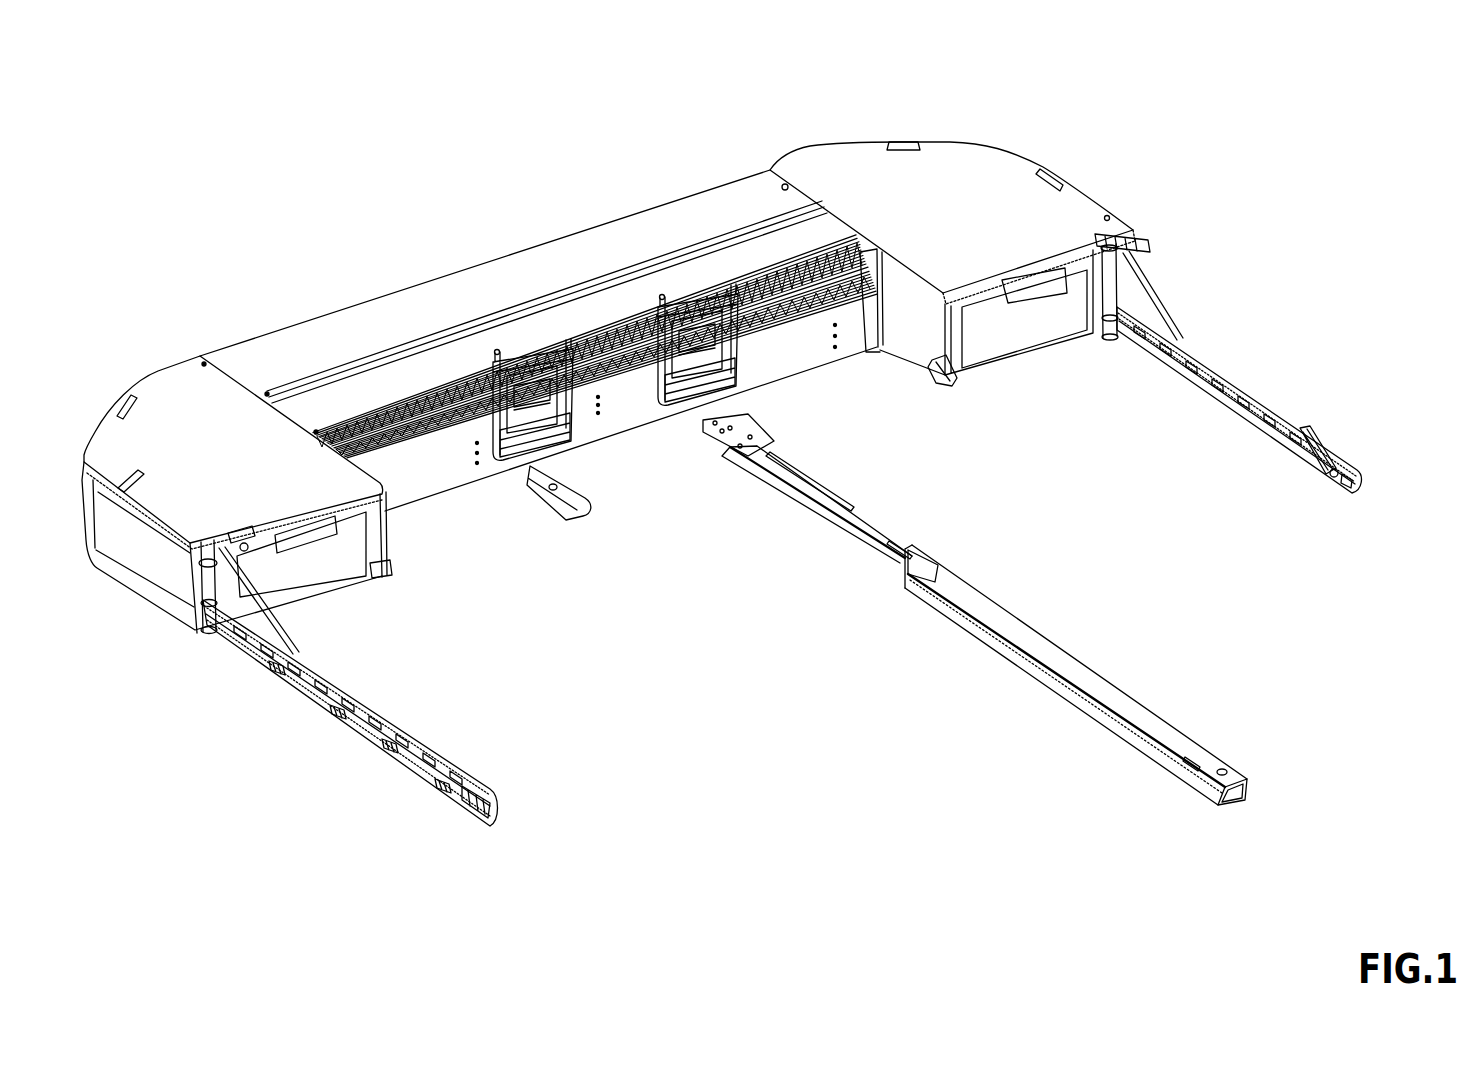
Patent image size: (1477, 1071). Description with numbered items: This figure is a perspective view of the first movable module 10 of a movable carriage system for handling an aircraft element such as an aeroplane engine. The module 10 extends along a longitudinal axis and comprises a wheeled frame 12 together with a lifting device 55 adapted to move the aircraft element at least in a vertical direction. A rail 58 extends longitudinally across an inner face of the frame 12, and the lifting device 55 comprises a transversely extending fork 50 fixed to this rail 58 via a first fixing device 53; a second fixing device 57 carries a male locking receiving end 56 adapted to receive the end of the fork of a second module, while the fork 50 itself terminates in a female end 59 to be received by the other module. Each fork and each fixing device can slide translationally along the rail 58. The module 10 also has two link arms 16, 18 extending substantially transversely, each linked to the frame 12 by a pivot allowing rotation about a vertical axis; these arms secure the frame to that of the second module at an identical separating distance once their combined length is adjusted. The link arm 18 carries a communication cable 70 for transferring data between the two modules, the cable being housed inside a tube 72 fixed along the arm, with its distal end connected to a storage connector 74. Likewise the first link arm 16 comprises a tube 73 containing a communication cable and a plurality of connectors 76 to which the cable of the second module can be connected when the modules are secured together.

The first movable module 10 is at (293, 158).
The frame 12 is at (277, 357).
The first link arm 16 is at (337, 698).
The link arm 18 is at (1263, 440).
The fork 50 is at (892, 607).
The first fixing device 53 is at (722, 373).
The lifting device 55 is at (594, 318).
The male locking receiving end 56 is at (587, 525).
The second fixing device 57 is at (550, 432).
The rail 58 is at (428, 449).
The female end 59 is at (1260, 790).
The communication cable 70 is at (1322, 430).
The tube 72 is at (1233, 375).
The tube 73 is at (340, 684).
The storage connector 74 is at (1333, 486).
The connectors 76 is at (333, 711).